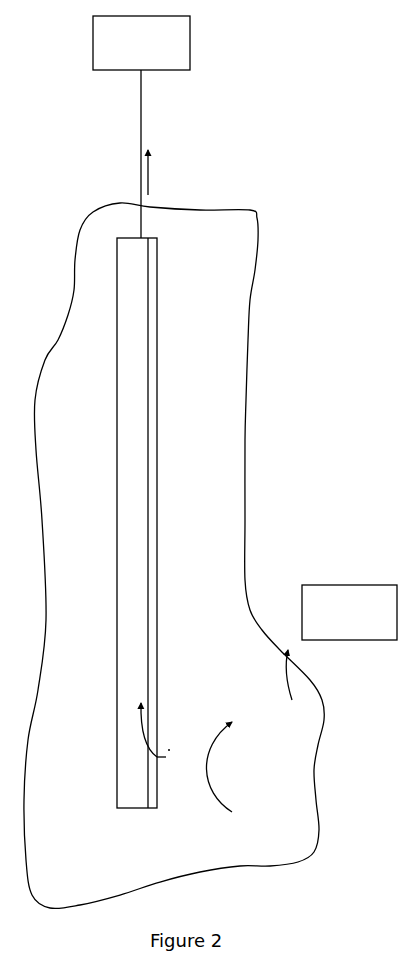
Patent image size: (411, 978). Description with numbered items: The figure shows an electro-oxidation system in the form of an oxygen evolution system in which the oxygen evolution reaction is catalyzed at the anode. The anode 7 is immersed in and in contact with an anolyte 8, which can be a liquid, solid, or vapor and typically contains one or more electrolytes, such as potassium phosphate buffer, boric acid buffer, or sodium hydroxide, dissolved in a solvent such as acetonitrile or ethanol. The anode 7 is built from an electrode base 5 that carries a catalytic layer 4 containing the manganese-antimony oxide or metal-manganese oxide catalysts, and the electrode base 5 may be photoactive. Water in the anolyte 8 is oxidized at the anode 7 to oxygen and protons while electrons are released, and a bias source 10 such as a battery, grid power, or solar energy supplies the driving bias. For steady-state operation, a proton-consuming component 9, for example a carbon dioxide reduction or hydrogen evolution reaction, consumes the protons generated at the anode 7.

The catalytic layer 4 is at (155, 382).
The electrode base 5 is at (123, 472).
The anode 7 is at (97, 571).
The anolyte 8 is at (229, 478).
The proton-consuming component 9 is at (342, 585).
The bias source 10 is at (190, 70).